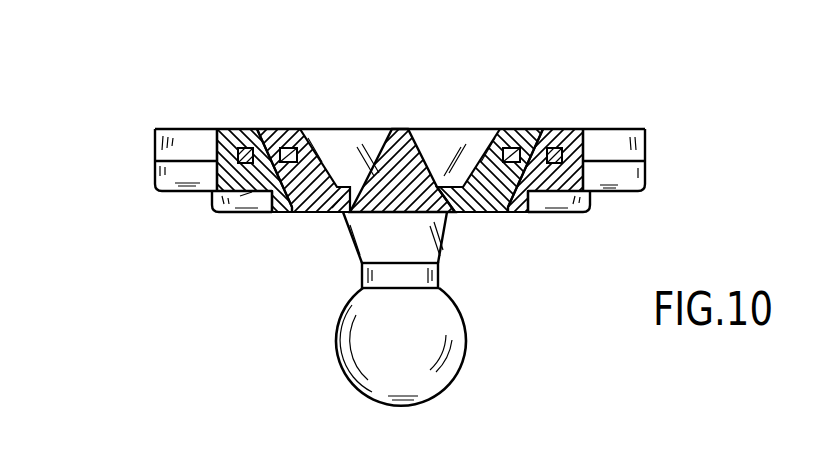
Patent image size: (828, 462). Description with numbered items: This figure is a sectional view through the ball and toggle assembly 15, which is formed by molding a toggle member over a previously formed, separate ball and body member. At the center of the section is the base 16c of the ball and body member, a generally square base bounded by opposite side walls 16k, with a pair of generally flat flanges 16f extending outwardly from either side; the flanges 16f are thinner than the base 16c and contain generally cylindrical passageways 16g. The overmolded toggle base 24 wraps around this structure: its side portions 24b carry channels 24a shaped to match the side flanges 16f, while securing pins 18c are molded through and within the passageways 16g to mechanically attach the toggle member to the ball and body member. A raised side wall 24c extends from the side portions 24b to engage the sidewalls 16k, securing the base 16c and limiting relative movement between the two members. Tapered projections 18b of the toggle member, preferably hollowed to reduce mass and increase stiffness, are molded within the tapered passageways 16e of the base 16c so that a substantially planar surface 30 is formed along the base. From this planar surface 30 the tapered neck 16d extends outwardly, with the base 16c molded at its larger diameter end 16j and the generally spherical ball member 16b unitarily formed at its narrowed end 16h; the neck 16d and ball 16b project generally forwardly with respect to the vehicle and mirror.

The ball and toggle assembly 15 is at (370, 52).
The base 24 is at (347, 129).
The channels 24a is at (291, 150).
The side portions 24b is at (178, 150).
The raised side wall 24c is at (553, 213).
The cylindrical passageways 16g is at (255, 150).
The side walls 16k is at (280, 205).
The flanges 16f is at (498, 150).
The base 16c is at (432, 160).
The tapered passageways 16e is at (333, 205).
The larger diameter end 16j is at (448, 215).
The neck 16d is at (440, 257).
The narrowed end 16h is at (437, 285).
The ball member 16b is at (367, 353).
The tapered projections 18b is at (470, 150).
The securing pins 18c is at (266, 150).
The planar surface 30 is at (538, 213).